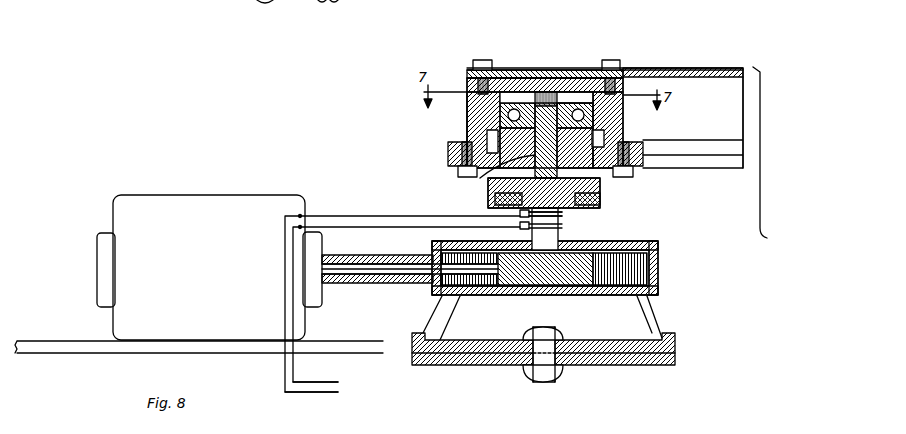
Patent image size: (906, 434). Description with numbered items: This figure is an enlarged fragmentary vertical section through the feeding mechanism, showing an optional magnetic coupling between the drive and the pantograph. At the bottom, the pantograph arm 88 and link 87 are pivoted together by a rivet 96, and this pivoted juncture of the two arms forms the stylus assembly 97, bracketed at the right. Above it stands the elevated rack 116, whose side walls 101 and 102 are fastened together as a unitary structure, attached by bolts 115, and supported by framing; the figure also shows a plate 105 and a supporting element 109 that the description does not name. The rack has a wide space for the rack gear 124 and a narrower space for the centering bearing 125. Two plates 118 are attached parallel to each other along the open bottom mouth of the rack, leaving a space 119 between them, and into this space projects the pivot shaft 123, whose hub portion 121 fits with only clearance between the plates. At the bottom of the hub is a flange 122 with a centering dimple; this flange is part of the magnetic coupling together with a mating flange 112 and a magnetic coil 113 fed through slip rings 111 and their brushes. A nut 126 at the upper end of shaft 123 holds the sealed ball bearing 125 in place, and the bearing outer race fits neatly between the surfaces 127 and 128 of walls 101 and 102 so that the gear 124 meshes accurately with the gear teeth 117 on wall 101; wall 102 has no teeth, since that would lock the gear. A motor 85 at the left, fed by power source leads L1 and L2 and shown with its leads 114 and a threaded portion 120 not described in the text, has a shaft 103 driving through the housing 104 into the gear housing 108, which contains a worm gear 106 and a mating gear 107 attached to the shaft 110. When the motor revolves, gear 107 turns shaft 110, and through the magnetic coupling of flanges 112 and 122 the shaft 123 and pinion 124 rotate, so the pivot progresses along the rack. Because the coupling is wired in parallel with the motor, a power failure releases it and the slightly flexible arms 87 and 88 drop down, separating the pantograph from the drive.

The motor 85 is at (199, 207).
The arm of the pantograph 88 is at (113, 350).
The link 87 is at (667, 365).
The rivet 96 is at (543, 370).
The stylus assembly 97 is at (626, 156).
The side wall 101 is at (470, 125).
The side wall 102 is at (623, 125).
The shaft 103 is at (387, 268).
The housing 104 is at (353, 283).
The mounting plate 105 is at (720, 68).
The worm gear 106 is at (538, 288).
The mating gear 107 is at (598, 287).
The gear housing 108 is at (658, 283).
The support legs 109 is at (462, 318).
The shaft 110 is at (552, 243).
The slip rings 111 is at (562, 214).
The mating flange 112 is at (490, 200).
The magnetic coil 113 is at (599, 199).
The lead wires 114 is at (334, 227).
The bolts 115 is at (483, 61).
The rack 116 is at (646, 70).
The gear teeth 117 is at (453, 157).
The plates 118 is at (462, 176).
The space 119 is at (533, 163).
The threaded portion 120 is at (546, 70).
The hub portion 121 is at (517, 225).
The flange 122 is at (601, 191).
The pivot shaft 123 is at (562, 83).
The rack gear 124 is at (487, 135).
The centering bearing 125 is at (510, 70).
The nut 126 is at (585, 82).
The surface 127 is at (502, 72).
The surface 128 is at (598, 68).
The power source lead L1 is at (325, 381).
The power source lead L2 is at (321, 392).